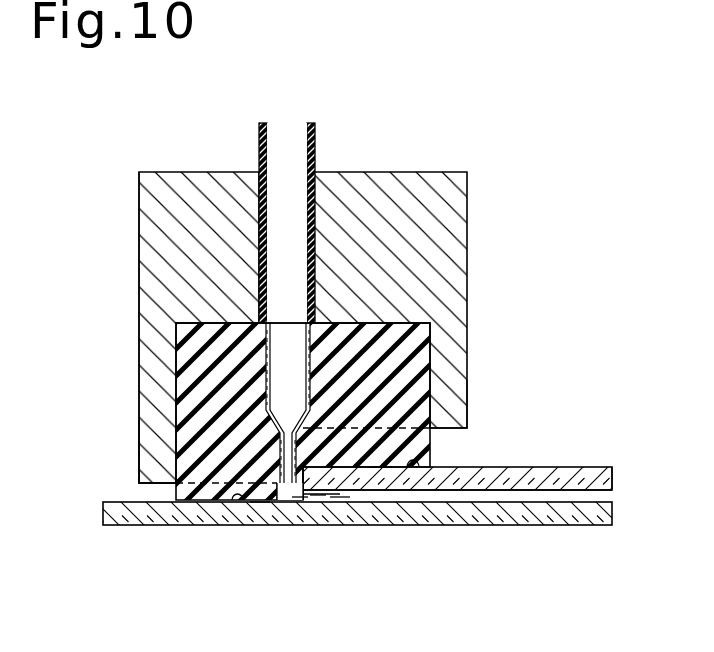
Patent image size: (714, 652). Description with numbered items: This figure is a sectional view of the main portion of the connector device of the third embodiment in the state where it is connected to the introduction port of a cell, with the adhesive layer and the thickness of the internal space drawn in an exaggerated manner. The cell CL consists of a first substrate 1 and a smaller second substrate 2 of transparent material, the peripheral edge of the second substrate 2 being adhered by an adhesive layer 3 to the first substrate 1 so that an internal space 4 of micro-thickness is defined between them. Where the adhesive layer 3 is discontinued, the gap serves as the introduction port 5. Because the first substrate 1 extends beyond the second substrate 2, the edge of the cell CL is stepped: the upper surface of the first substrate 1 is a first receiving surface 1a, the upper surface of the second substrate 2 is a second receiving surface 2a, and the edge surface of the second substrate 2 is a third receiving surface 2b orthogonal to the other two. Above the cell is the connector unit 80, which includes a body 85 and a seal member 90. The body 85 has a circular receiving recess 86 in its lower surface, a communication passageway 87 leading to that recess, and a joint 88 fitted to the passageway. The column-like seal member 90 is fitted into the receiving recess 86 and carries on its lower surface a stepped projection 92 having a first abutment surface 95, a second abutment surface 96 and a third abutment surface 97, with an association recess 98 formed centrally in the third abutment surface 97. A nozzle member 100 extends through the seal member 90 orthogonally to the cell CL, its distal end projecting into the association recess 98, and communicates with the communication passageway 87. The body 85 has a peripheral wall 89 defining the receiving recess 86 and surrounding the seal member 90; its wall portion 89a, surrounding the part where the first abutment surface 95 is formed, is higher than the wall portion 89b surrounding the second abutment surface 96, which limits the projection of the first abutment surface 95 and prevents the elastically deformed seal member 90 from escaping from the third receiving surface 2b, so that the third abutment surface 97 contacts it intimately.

The connector unit 80 is at (505, 150).
The body 85 is at (468, 252).
The receiving recess 86 is at (399, 322).
The communication passageway 87 is at (264, 208).
The joint 88 is at (314, 150).
The peripheral wall 89 is at (130, 403).
The wall portion 89a is at (145, 433).
The wall portion 89b is at (469, 402).
The seal member 90 is at (438, 361).
The stepped projection 92 is at (258, 520).
The first abutment surface 95 is at (208, 503).
The second abutment surface 96 is at (380, 468).
The third abutment surface 97 is at (318, 495).
The association recess 98 is at (300, 497).
The nozzle member 100 is at (268, 362).
The first substrate 1 is at (557, 467).
The first receiving surface 1a is at (237, 497).
The second substrate 2 is at (555, 527).
The second receiving surface 2a is at (413, 468).
The third receiving surface 2b is at (289, 503).
The adhesive layer 3 is at (362, 495).
The internal space 4 is at (497, 495).
The introduction port 5 is at (340, 497).
The cell CL is at (619, 460).